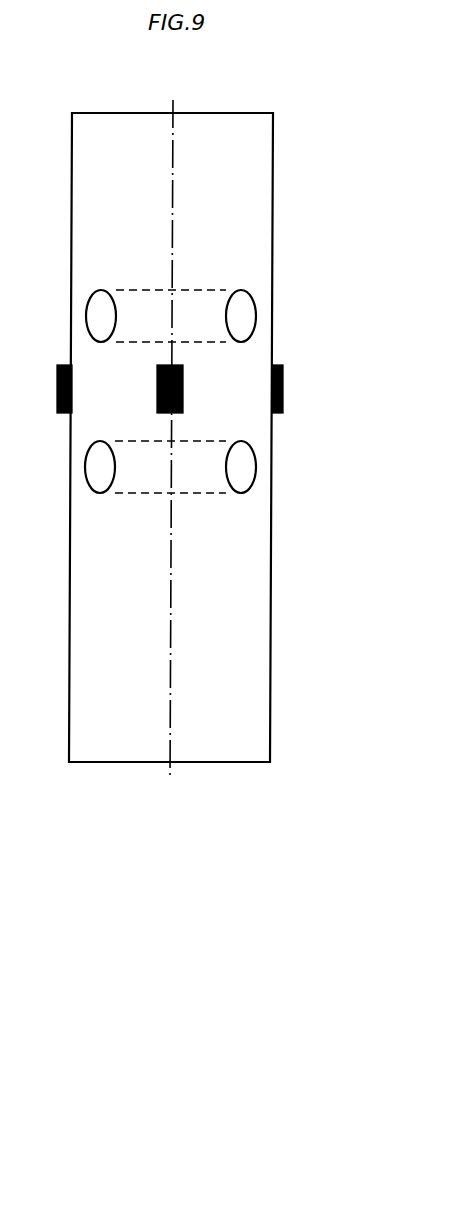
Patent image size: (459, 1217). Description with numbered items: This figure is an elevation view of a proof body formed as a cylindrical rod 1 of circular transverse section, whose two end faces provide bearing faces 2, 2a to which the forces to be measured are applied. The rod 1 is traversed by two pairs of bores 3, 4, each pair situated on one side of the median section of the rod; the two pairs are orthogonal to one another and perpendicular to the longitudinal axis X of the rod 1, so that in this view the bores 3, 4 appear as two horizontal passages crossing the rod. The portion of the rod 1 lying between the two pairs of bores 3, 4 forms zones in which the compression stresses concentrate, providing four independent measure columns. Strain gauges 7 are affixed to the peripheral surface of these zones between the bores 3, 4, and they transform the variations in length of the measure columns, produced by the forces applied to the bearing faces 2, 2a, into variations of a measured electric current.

The cylindrical rod 1 is at (273, 210).
The bearing face 2 is at (208, 112).
The bearing face 2a is at (128, 763).
The bore 3 is at (248, 318).
The bore 4 is at (93, 308).
The strain gauge 7 is at (57, 385).
The longitudinal axis X is at (173, 203).